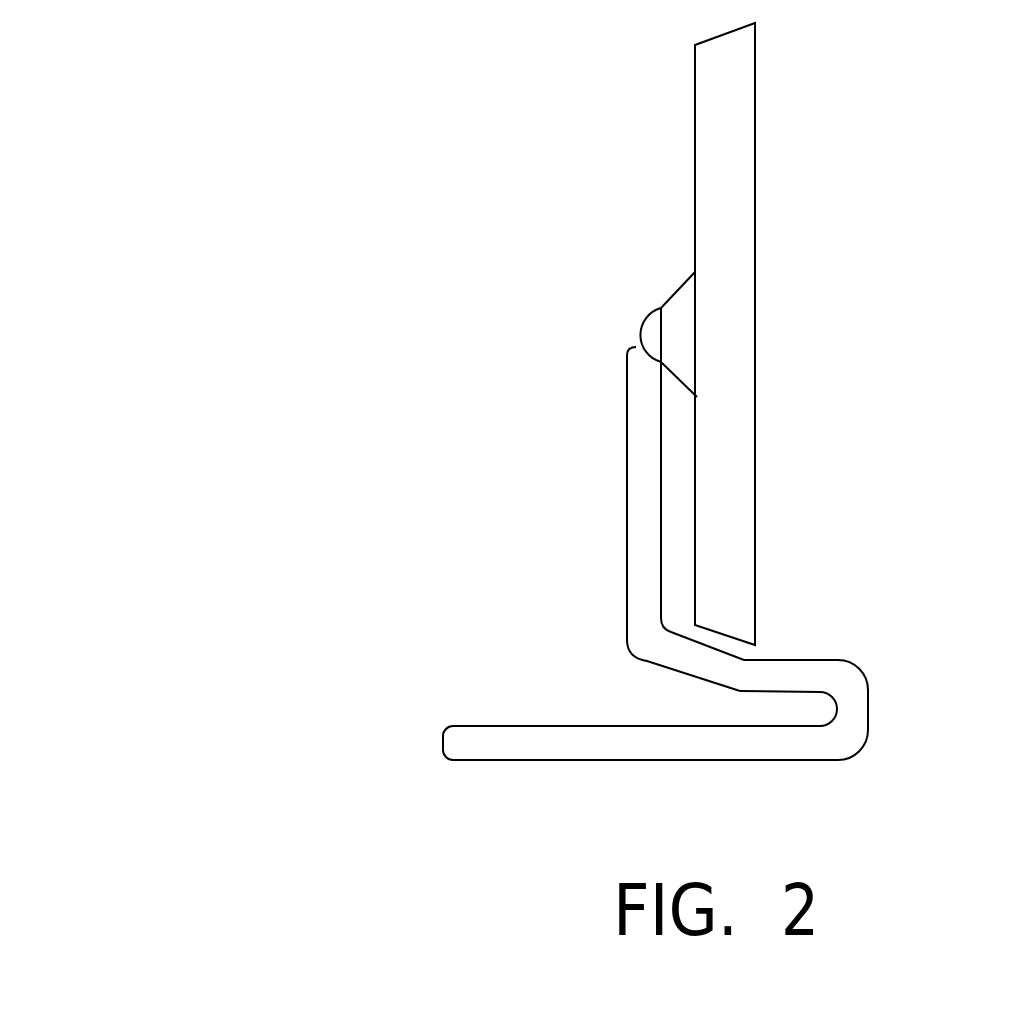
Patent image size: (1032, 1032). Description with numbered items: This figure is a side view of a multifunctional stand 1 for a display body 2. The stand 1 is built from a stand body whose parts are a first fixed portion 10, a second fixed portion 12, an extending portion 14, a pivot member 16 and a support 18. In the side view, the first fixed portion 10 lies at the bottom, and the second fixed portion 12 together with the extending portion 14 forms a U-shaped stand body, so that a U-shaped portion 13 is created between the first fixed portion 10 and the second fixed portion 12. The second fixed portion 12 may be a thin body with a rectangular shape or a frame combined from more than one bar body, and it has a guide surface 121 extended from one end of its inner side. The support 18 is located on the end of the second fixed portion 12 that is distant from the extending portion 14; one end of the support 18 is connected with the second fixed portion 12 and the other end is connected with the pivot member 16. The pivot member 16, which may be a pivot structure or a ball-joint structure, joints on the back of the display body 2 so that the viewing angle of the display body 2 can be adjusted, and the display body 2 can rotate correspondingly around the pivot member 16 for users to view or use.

The multifunctional stand 1 is at (376, 496).
The display body 2 is at (773, 330).
The first fixed portion 10 is at (498, 726).
The second fixed portion 12 is at (792, 658).
The guide surface 121 is at (683, 668).
The U-shaped portion 13 is at (776, 713).
The extending portion 14 is at (853, 710).
The pivot member 16 is at (632, 335).
The support 18 is at (627, 423).